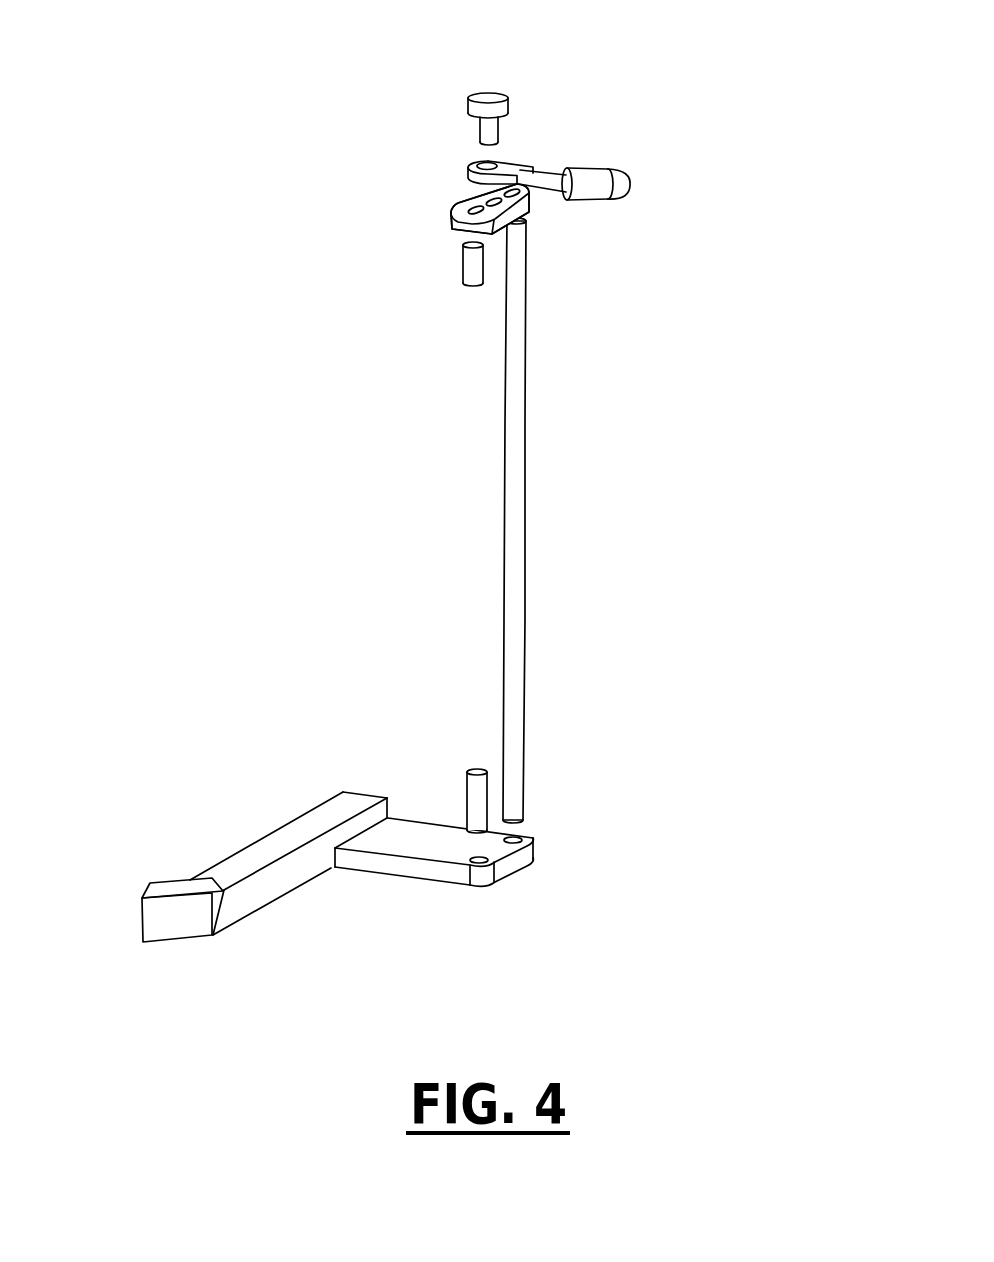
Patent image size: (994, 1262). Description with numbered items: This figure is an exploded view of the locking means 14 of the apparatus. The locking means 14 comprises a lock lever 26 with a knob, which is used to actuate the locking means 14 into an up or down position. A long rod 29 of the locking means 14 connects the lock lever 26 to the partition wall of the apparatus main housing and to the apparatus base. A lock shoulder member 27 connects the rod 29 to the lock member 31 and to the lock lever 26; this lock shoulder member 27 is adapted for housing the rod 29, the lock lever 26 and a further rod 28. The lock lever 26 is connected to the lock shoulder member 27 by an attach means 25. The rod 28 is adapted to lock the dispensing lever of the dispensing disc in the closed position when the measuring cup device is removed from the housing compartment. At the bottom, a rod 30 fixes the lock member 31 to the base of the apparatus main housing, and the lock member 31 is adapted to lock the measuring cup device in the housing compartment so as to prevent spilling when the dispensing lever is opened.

The locking means 14 is at (604, 504).
The attach means 25 is at (525, 103).
The lock lever 26 is at (552, 173).
The lock shoulder member 27 is at (452, 215).
The rod 28 is at (468, 268).
The rod 29 is at (508, 337).
The rod 30 is at (475, 790).
The lock member 31 is at (262, 857).